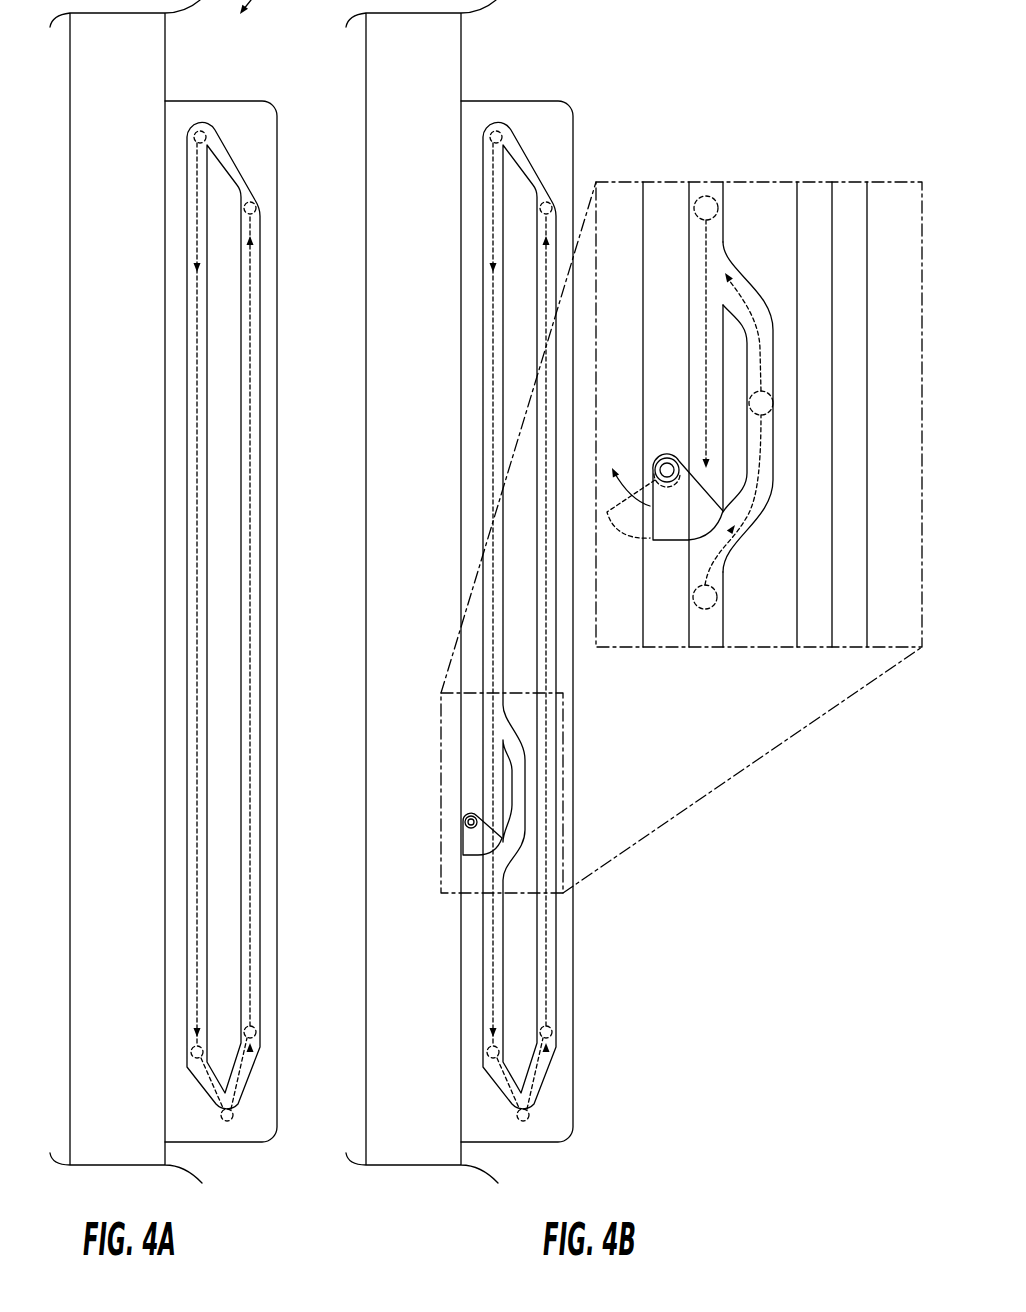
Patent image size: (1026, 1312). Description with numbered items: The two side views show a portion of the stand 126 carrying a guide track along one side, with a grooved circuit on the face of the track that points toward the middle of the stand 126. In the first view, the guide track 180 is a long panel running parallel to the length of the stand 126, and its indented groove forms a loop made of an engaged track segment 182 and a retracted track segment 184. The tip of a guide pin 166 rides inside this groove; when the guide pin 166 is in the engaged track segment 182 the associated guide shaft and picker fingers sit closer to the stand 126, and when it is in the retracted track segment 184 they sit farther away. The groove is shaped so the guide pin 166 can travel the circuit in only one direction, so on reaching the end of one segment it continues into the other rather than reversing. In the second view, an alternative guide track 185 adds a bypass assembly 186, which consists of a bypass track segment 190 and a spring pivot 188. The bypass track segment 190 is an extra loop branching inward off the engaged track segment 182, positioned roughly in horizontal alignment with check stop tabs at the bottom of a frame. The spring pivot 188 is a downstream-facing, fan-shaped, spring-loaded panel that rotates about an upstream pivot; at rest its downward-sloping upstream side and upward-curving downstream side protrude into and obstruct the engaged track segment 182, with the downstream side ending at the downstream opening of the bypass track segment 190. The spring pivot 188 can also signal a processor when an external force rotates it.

In FIG. 4A, the stand 126 is at (82, 242).
In FIG. 4A, the guide pin 166 is at (203, 128).
In FIG. 4B, the guide pin 166 is at (700, 197).
In FIG. 4A, the guide track 180 is at (233, 176).
In FIG. 4A, the engaged track segment 182 is at (197, 447).
In FIG. 4B, the engaged track segment 182 is at (706, 380).
In FIG. 4A, the retracted track segment 184 is at (250, 697).
In FIG. 4B, the alternative guide track 185 is at (523, 152).
In FIG. 4B, the bypass assembly 186 is at (538, 786).
In FIG. 4B, the spring pivot 188 is at (702, 505).
In FIG. 4B, the bypass track segment 190 is at (774, 350).